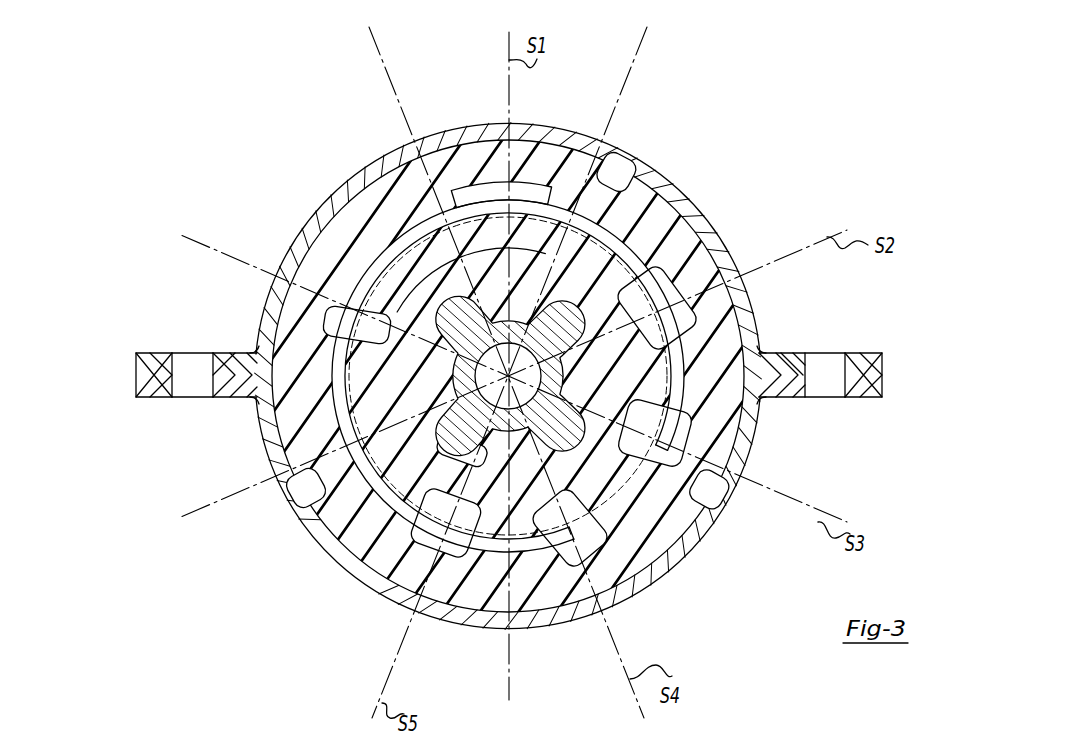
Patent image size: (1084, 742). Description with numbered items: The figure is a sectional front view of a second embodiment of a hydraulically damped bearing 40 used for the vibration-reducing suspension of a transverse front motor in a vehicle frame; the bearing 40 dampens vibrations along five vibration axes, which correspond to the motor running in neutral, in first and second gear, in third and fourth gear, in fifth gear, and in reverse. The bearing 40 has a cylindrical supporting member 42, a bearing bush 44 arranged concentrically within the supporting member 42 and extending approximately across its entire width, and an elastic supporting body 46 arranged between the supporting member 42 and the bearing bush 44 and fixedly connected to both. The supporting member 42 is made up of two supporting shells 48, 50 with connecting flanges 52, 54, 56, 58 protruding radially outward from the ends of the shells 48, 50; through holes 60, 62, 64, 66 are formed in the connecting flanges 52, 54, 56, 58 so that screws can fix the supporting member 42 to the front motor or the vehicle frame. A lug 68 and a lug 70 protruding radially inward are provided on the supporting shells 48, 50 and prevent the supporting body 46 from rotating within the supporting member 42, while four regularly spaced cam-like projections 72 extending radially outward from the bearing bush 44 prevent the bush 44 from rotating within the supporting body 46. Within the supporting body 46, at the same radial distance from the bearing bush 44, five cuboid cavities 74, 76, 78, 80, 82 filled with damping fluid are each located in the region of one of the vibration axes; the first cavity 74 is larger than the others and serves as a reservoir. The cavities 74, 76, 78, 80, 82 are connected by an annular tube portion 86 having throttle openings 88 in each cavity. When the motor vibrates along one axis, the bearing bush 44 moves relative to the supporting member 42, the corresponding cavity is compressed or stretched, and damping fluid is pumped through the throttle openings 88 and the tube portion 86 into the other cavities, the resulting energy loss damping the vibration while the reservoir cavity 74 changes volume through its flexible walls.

The hydraulically damped bearing 40 is at (258, 147).
The supporting member 42 is at (458, 126).
The bearing bush 44 is at (455, 368).
The elastic supporting body 46 is at (657, 212).
The supporting shell 48 is at (400, 164).
The supporting shell 50 is at (323, 545).
The connecting flange 52 is at (147, 357).
The connecting flange 54 is at (861, 362).
The connecting flange 56 is at (139, 397).
The connecting flange 58 is at (866, 391).
The through hole 60 is at (190, 353).
The through hole 62 is at (806, 367).
The through hole 64 is at (190, 398).
The through hole 66 is at (845, 388).
The lug 68 is at (630, 162).
The lug 70 is at (308, 499).
The cam-like projection 72 is at (442, 454).
The first cavity 74 is at (330, 268).
The second cavity 76 is at (664, 273).
The third cavity 78 is at (700, 520).
The fourth cavity 80 is at (552, 585).
The fifth cavity 82 is at (363, 568).
The annular tube portion 86 is at (272, 412).
The throttle openings 88 is at (432, 242).